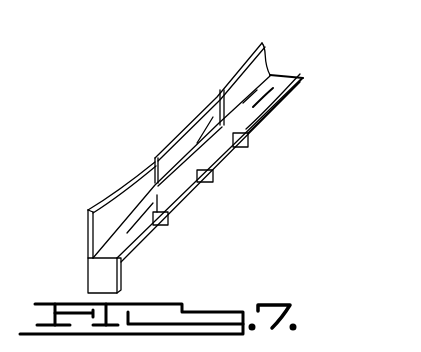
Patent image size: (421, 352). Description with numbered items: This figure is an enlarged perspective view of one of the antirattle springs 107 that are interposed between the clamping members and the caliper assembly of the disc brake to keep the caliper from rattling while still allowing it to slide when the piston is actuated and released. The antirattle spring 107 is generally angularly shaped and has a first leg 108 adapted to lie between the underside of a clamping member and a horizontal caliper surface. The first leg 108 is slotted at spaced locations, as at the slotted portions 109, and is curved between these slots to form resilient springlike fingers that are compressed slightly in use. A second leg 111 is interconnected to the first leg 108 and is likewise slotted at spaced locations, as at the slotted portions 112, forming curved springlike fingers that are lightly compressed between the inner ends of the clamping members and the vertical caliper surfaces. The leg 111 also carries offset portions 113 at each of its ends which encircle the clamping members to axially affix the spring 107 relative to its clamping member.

The antirattle spring 107 is at (100, 194).
The first leg 108 is at (172, 127).
The slotted portions 109 is at (215, 93).
The leg 111 is at (287, 68).
The slotted portions 112 is at (243, 148).
The offset portions 113 is at (120, 283).